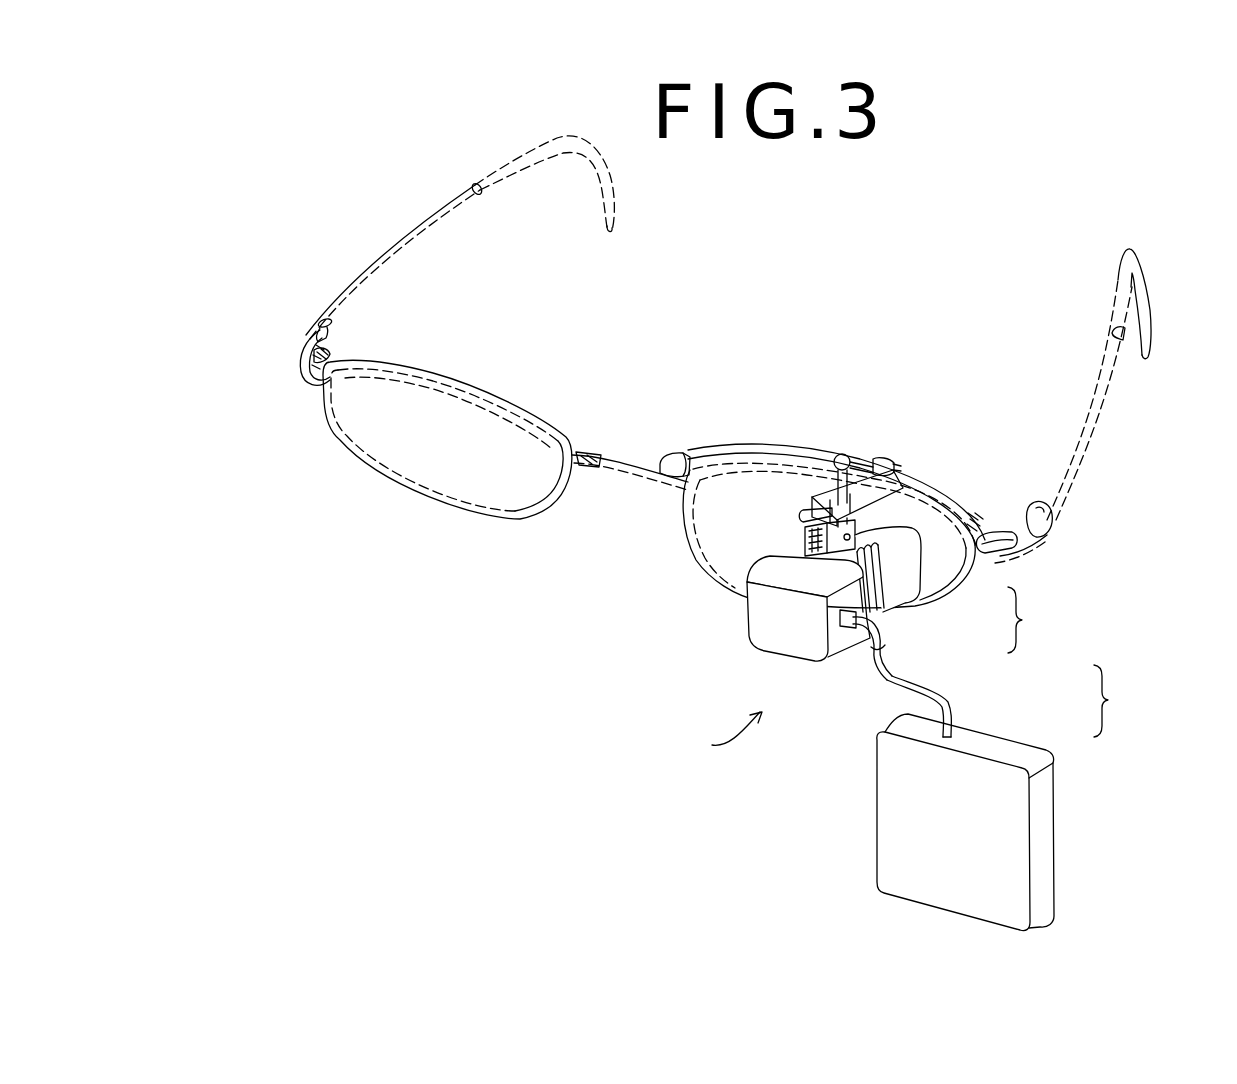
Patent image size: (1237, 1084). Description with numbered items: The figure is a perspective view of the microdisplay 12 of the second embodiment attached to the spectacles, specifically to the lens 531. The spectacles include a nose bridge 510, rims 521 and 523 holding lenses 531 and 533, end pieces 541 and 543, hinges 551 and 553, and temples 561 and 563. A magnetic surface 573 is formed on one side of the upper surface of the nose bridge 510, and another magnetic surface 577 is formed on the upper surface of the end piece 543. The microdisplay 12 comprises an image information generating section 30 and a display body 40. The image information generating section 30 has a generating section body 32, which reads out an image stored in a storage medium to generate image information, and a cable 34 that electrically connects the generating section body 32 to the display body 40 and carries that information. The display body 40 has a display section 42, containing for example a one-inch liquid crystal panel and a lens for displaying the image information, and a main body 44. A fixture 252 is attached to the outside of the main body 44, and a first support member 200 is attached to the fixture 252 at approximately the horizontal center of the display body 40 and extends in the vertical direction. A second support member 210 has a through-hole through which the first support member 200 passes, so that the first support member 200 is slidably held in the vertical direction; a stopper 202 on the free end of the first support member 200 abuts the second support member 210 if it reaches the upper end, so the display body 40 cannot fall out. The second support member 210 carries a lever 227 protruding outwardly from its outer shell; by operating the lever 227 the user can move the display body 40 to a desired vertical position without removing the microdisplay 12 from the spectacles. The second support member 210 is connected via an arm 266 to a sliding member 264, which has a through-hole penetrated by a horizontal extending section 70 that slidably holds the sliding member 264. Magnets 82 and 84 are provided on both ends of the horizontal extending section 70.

The microdisplay 12 is at (720, 735).
The image information generating section 30 is at (1119, 701).
The generating section body 32 is at (987, 770).
The cable 34 is at (940, 690).
The display body 40 is at (902, 608).
The display section 42 is at (912, 573).
The main body 44 is at (873, 652).
The horizontal extending section 70 is at (760, 445).
The magnet 82 is at (680, 456).
The magnet 84 is at (1002, 532).
The first support member 200 is at (514, 372).
The stopper 202 is at (841, 455).
The second support member 210 is at (878, 480).
The lever 227 is at (805, 516).
The fixture 252 is at (970, 513).
The sliding member 264 is at (890, 463).
The arm 266 is at (880, 458).
The nose bridge 510 is at (627, 460).
The rim 521 is at (688, 517).
The rim 523 is at (545, 512).
The lens 531 is at (730, 545).
The lens 533 is at (483, 492).
The end piece 541 is at (1032, 550).
The end piece 543 is at (307, 373).
The hinge 551 is at (1035, 505).
The hinge 553 is at (337, 322).
The temple 561 is at (1085, 447).
The temple 563 is at (378, 266).
The magnetic surface 573 is at (590, 470).
The magnetic surface 577 is at (324, 353).